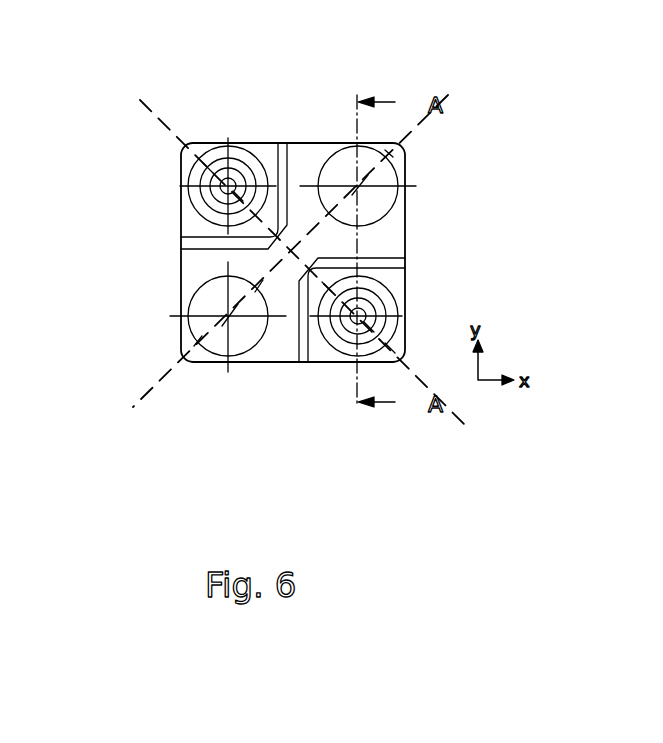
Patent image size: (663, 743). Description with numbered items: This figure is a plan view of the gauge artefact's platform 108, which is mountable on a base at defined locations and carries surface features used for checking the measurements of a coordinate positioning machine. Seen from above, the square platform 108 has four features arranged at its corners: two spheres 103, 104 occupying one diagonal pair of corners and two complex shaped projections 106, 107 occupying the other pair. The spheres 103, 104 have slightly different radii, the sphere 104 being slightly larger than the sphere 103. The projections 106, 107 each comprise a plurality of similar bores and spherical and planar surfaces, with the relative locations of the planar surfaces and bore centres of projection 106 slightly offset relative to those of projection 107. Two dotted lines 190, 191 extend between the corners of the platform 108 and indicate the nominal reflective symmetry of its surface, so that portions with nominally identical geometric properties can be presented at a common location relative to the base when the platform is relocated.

The sphere 103 is at (400, 176).
The sphere 104 is at (185, 302).
The complex shaped projection 106 is at (400, 302).
The complex shaped projection 107 is at (185, 170).
The platform 108 is at (398, 238).
The dotted line 190 is at (140, 100).
The dotted line 191 is at (455, 92).